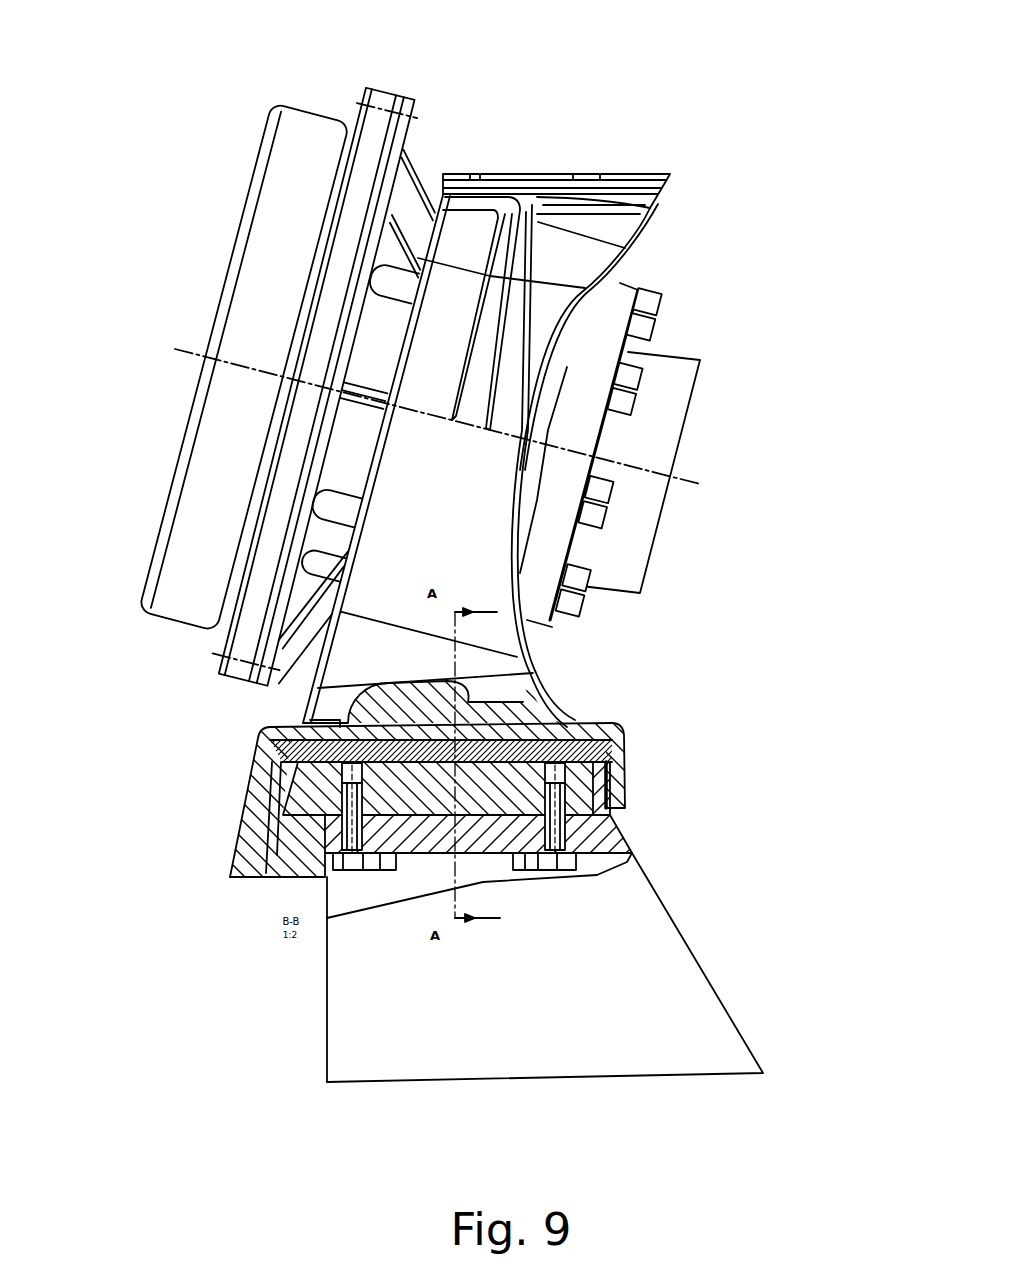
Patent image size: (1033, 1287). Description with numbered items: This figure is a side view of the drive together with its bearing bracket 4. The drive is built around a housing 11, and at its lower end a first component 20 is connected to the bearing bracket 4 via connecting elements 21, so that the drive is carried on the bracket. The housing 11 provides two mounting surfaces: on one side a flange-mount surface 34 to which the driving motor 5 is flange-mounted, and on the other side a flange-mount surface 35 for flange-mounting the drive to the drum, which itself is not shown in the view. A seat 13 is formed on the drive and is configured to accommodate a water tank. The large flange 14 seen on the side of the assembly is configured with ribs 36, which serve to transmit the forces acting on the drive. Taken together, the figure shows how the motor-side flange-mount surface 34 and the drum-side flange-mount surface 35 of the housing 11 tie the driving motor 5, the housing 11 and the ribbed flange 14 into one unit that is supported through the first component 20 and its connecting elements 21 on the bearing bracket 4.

The bearing bracket 4 is at (652, 920).
The driving motor 5 is at (665, 390).
The housing 11 is at (470, 483).
The seat 13 is at (627, 170).
The flange 14 is at (258, 673).
The first component 20 is at (285, 873).
The connecting elements 21 is at (350, 862).
The flange-mount surface 34 is at (585, 307).
The flange-mount surface 35 is at (369, 88).
The ribs 36 is at (412, 187).